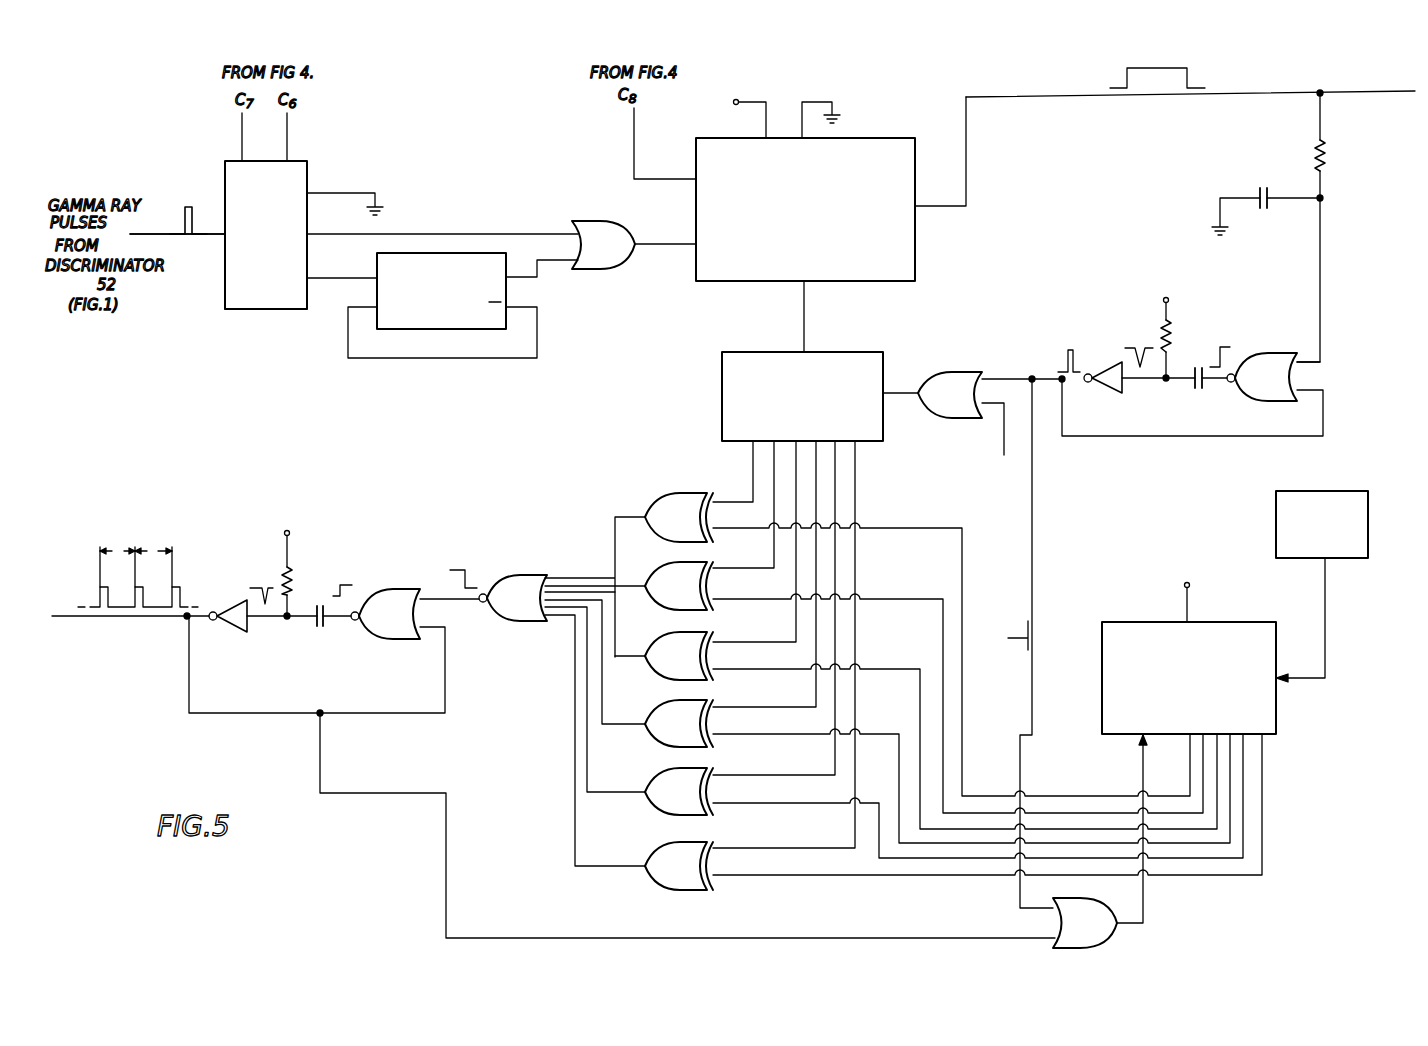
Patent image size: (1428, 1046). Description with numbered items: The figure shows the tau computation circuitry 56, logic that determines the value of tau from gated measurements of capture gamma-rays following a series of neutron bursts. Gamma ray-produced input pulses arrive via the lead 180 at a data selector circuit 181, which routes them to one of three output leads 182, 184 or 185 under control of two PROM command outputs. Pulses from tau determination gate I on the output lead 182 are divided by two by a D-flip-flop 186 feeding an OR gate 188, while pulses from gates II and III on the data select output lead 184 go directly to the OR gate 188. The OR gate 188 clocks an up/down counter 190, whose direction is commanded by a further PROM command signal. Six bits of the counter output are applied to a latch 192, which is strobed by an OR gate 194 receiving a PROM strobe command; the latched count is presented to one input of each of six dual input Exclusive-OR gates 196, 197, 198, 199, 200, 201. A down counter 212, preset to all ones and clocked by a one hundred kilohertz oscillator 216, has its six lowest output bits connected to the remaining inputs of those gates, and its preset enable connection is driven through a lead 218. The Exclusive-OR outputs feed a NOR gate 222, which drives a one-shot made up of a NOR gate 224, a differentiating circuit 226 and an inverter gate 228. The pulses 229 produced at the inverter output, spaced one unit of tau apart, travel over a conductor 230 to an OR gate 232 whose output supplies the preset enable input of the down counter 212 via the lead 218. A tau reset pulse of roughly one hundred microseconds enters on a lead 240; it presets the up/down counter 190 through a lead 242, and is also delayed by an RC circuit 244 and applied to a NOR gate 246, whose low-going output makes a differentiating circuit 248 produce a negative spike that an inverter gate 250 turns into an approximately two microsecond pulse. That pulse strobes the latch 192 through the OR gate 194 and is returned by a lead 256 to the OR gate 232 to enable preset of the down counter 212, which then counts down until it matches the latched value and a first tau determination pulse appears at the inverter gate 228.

The tau computation circuitry 56 is at (200, 160).
The lead 180 is at (210, 238).
The data selector circuit 181 is at (275, 309).
The output lead 182 is at (351, 259).
The data select output lead 184 is at (351, 213).
The output lead 185 is at (373, 162).
The D-flip-flop 186 is at (517, 297).
The OR gate 188 is at (590, 224).
The up/down counter 190 is at (915, 272).
The latch 192 is at (868, 352).
The OR gate 194 is at (935, 413).
The Exclusive-OR gate 196 is at (666, 497).
The Exclusive-OR gate 197 is at (661, 575).
The Exclusive-OR gate 198 is at (667, 645).
The Exclusive-OR gate 199 is at (654, 714).
The Exclusive-OR gate 200 is at (652, 782).
The Exclusive-OR gate 201 is at (660, 857).
The down counter 212 is at (1102, 658).
The 100 KHz oscillator 216 is at (1276, 502).
The lead 218 is at (1143, 774).
The NOR gate 222 is at (518, 580).
The NOR gate 224 is at (398, 598).
The differentiating circuit 226 is at (305, 590).
The inverter gate 228 is at (232, 598).
The pulses 229 is at (172, 590).
The conductor 230 is at (445, 832).
The OR gate 232 is at (1122, 933).
The lead 240 is at (1387, 92).
The lead 242 is at (967, 160).
The RC circuit 244 is at (1303, 178).
The NOR gate 246 is at (1274, 358).
The differentiating circuit 248 is at (1198, 358).
The inverter gate 250 is at (1102, 362).
The lead 256 is at (1034, 590).